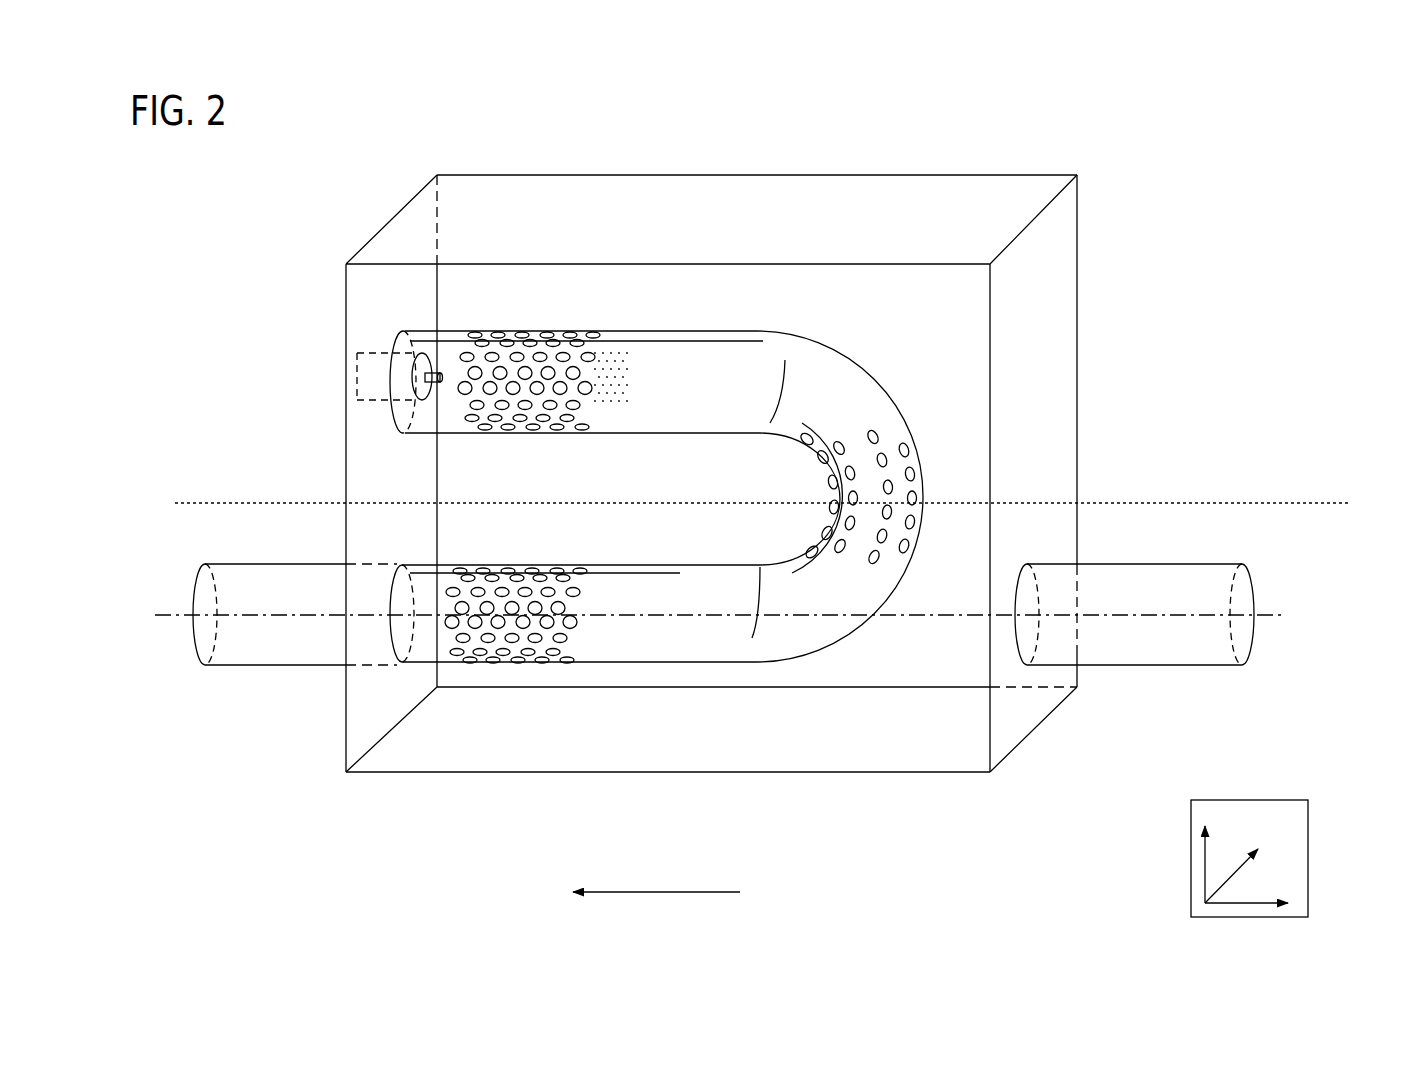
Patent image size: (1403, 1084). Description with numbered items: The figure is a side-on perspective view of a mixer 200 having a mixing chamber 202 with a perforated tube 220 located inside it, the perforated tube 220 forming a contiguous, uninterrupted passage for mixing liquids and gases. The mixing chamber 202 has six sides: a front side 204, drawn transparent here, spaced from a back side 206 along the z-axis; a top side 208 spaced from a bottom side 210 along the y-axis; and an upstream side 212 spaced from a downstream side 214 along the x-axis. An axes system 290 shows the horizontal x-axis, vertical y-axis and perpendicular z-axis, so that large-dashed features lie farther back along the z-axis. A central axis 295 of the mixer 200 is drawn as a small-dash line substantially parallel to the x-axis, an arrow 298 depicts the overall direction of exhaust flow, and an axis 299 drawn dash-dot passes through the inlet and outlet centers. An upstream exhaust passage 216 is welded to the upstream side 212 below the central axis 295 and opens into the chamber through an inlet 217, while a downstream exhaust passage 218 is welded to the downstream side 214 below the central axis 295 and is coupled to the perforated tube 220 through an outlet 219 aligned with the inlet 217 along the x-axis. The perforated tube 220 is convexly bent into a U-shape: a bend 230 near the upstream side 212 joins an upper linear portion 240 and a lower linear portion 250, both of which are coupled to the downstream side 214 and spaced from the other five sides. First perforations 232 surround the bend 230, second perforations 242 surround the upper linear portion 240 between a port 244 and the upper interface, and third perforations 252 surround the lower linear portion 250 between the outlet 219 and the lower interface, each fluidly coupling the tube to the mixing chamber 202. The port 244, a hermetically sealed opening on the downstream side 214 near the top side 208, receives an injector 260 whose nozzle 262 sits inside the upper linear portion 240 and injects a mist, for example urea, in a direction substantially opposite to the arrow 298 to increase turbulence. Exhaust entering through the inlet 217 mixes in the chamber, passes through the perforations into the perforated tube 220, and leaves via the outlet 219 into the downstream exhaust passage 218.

The mixer 200 is at (1253, 133).
The mixing chamber 202 is at (1115, 173).
The front side 204 is at (772, 773).
The back side 206 is at (747, 175).
The top side 208 is at (732, 238).
The bottom side 210 is at (821, 755).
The upstream side 212 is at (1019, 426).
The downstream side 214 is at (367, 536).
The upstream exhaust passage 216 is at (1127, 628).
The inlet 217 is at (1040, 616).
The downstream exhaust passage 218 is at (281, 646).
The outlet 219 is at (390, 622).
The perforated tube 220 is at (930, 296).
The bend 230 is at (913, 408).
The first perforations 232 is at (858, 428).
The upper linear portion 240 is at (615, 300).
The second perforations 242 is at (525, 442).
The port 244 is at (399, 418).
The lower linear portion 250 is at (622, 537).
The third perforations 252 is at (590, 615).
The injector 260 is at (372, 353).
The nozzle 262 is at (437, 385).
The axes system 290 is at (1262, 800).
The central axis 295 is at (1277, 503).
The arrow 298 is at (668, 892).
The axis 299 is at (230, 613).